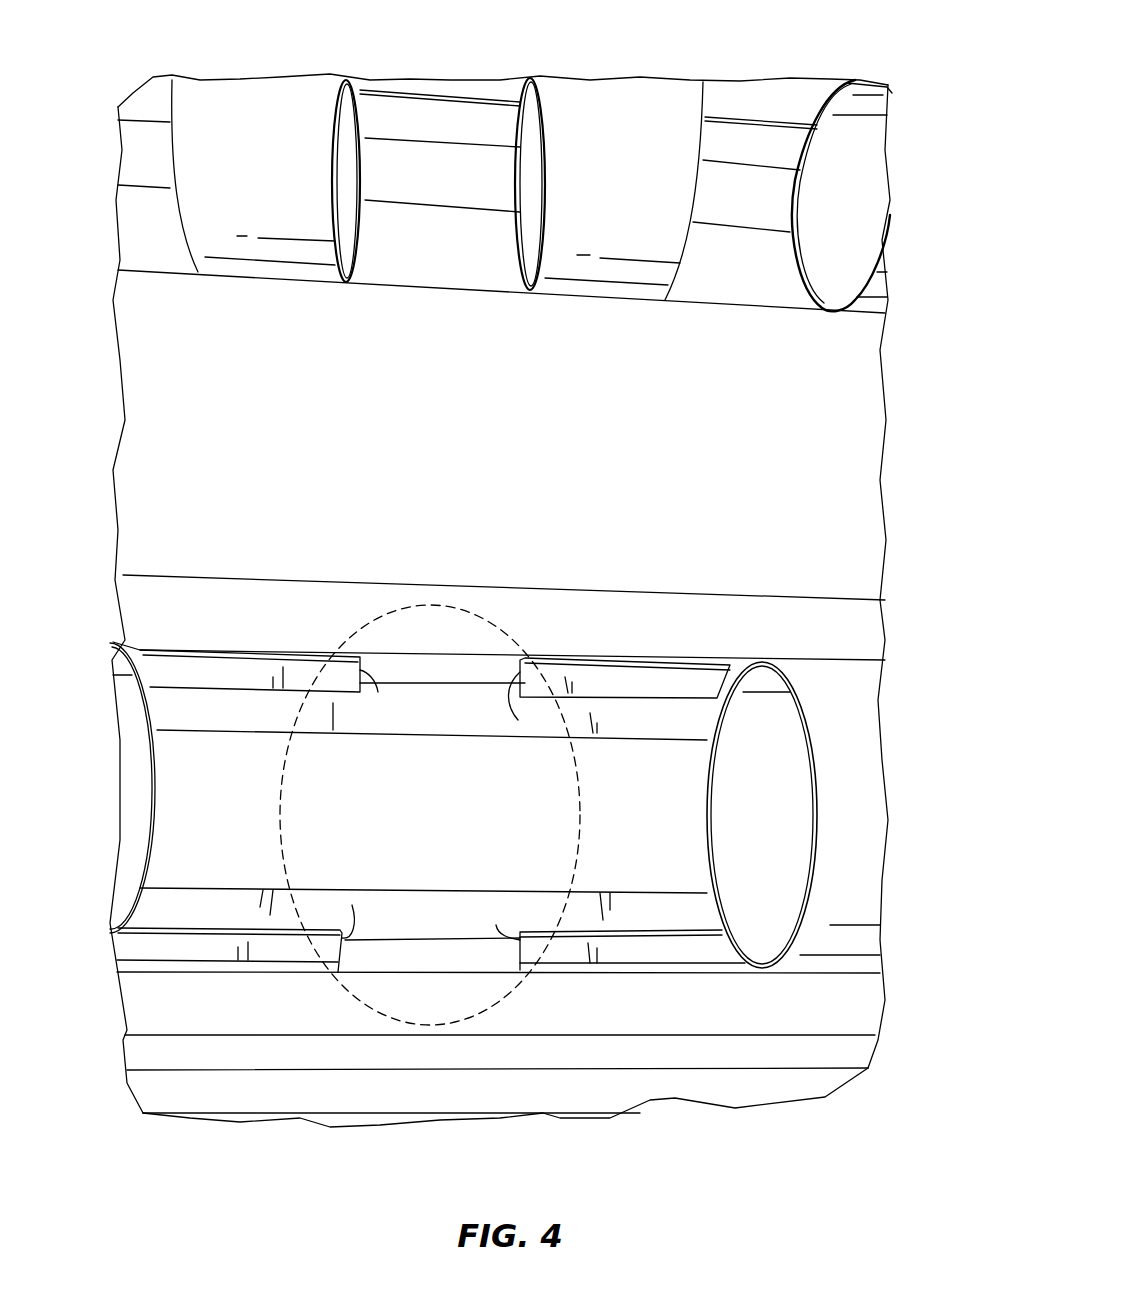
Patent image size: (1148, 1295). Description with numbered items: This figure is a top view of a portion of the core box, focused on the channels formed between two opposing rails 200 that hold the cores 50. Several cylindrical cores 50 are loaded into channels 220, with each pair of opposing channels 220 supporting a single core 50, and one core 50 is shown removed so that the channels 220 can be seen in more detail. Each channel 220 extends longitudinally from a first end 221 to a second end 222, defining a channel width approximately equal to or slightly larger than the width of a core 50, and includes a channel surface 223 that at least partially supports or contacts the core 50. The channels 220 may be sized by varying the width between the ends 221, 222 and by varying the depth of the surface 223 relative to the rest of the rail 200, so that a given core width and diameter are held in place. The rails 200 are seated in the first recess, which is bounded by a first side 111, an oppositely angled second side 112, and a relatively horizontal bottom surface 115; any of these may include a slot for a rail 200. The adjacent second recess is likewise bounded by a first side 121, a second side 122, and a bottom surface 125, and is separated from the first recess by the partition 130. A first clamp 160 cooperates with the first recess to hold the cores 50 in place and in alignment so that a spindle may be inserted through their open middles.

The core 50 is at (260, 100).
The first side 111 is at (273, 1010).
The second side 112 is at (228, 617).
The bottom surface 115 is at (627, 833).
The first side 121 is at (443, 265).
The second side 122 is at (500, 93).
The bottom surface 125 is at (422, 185).
The partition 130 is at (846, 422).
The first clamp 160 is at (603, 1085).
The rail 200 is at (467, 110).
The channel 220 is at (373, 618).
The first end 221 is at (518, 720).
The second end 222 is at (378, 692).
The channel surface 223 is at (422, 681).